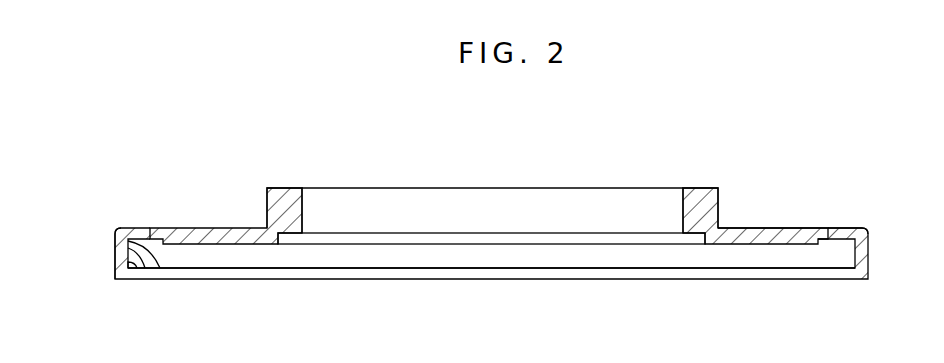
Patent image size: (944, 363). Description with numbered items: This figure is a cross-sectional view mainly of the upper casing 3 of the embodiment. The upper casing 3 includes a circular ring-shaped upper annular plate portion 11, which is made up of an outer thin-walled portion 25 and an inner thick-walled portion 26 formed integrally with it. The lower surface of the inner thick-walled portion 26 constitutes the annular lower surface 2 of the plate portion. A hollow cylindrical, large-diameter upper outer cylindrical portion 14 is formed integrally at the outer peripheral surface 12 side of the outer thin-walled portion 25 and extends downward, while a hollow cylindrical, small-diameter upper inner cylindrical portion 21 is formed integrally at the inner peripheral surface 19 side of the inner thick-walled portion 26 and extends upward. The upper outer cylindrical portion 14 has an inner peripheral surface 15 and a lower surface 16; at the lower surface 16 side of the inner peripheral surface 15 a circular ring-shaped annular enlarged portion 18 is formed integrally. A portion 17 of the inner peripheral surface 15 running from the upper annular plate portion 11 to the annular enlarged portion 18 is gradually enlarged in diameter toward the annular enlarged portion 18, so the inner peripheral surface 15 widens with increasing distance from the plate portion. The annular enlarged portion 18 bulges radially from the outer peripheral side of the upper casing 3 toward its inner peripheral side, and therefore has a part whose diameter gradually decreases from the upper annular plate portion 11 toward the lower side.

The annular lower surface 2 is at (787, 243).
The upper casing 3 is at (723, 188).
The upper annular plate portion 11 is at (222, 233).
The outer peripheral surface 12 is at (868, 238).
The upper outer cylindrical portion 14 is at (120, 255).
The inner peripheral surface 15 is at (135, 267).
The lower surface 16 is at (860, 279).
The portion of the inner peripheral surface 17 is at (133, 250).
The annular enlarged portion 18 is at (125, 272).
The inner peripheral surface 19 is at (285, 245).
The upper inner cylindrical portion 21 is at (287, 193).
The outer thin-walled portion 25 is at (848, 228).
The inner thick-walled portion 26 is at (745, 232).